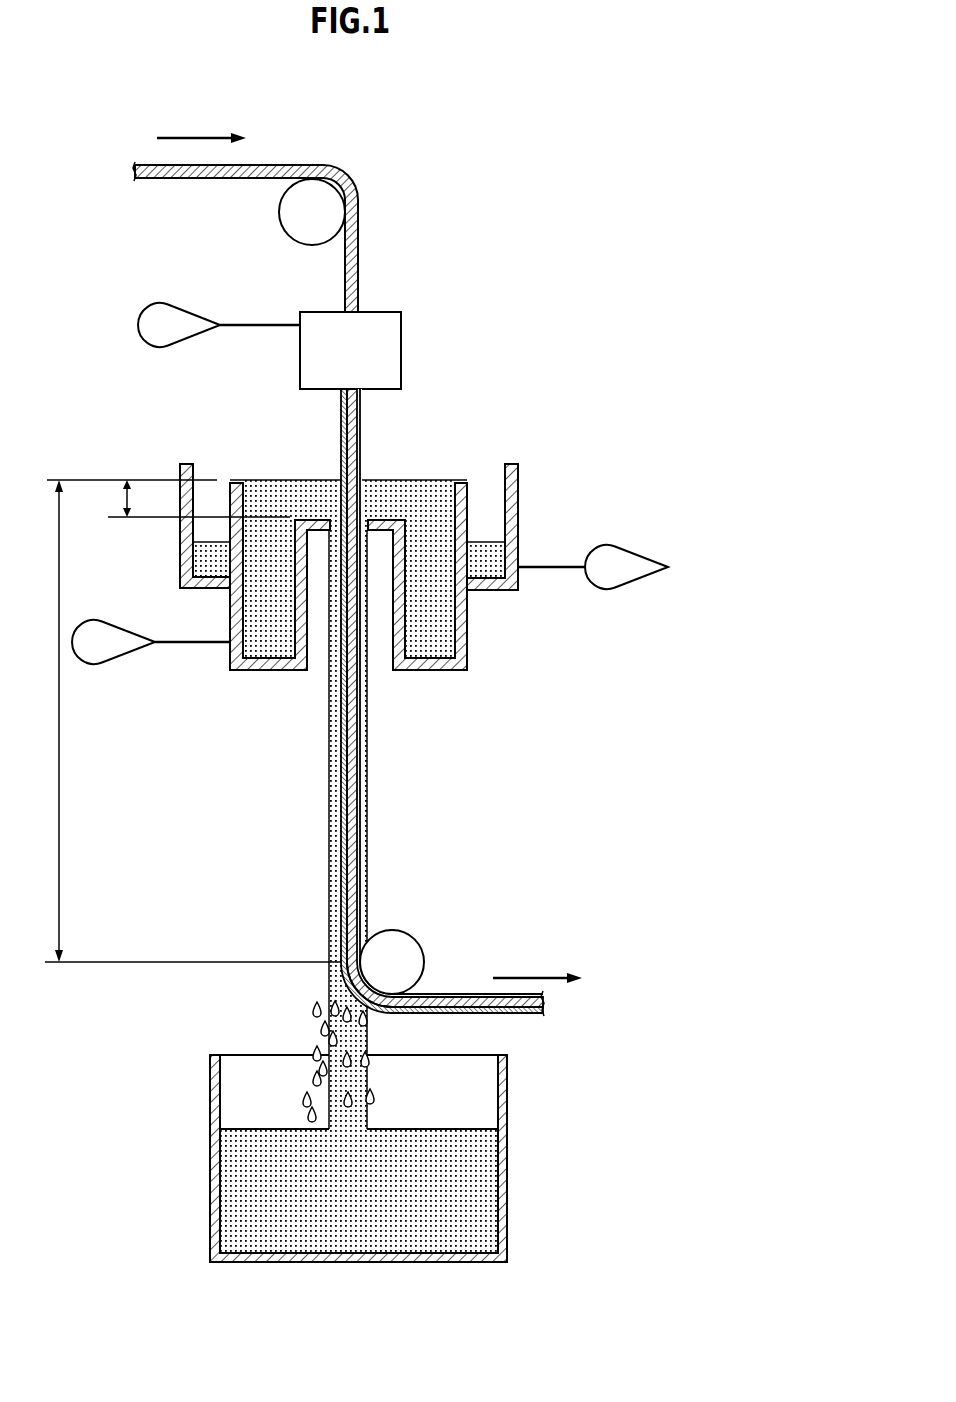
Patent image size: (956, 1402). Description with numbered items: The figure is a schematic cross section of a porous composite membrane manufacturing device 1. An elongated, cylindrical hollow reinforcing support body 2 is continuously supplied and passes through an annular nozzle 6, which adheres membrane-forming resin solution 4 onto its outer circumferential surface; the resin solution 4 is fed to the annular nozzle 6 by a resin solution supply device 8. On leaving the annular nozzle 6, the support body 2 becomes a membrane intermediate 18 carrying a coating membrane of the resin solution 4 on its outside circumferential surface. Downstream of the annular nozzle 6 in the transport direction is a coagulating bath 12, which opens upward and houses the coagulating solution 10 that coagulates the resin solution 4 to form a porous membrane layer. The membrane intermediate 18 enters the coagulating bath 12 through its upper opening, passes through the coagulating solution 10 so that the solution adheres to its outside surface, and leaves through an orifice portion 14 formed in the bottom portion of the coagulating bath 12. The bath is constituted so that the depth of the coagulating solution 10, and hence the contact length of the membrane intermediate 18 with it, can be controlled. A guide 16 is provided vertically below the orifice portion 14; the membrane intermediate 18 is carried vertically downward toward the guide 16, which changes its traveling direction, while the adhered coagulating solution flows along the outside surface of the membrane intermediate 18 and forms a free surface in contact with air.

The porous composite membrane manufacturing device 1 is at (614, 247).
The hollow reinforcing support body 2 is at (296, 165).
The membrane-forming resin solution 4 is at (360, 416).
The annular nozzle 6 is at (381, 312).
The resin solution supply device 8 is at (152, 322).
The coagulating solution 10 is at (440, 635).
The coagulating bath 12 is at (268, 670).
The orifice portion 14 is at (338, 522).
The guide 16 is at (412, 934).
The membrane intermediate 18 is at (388, 441).